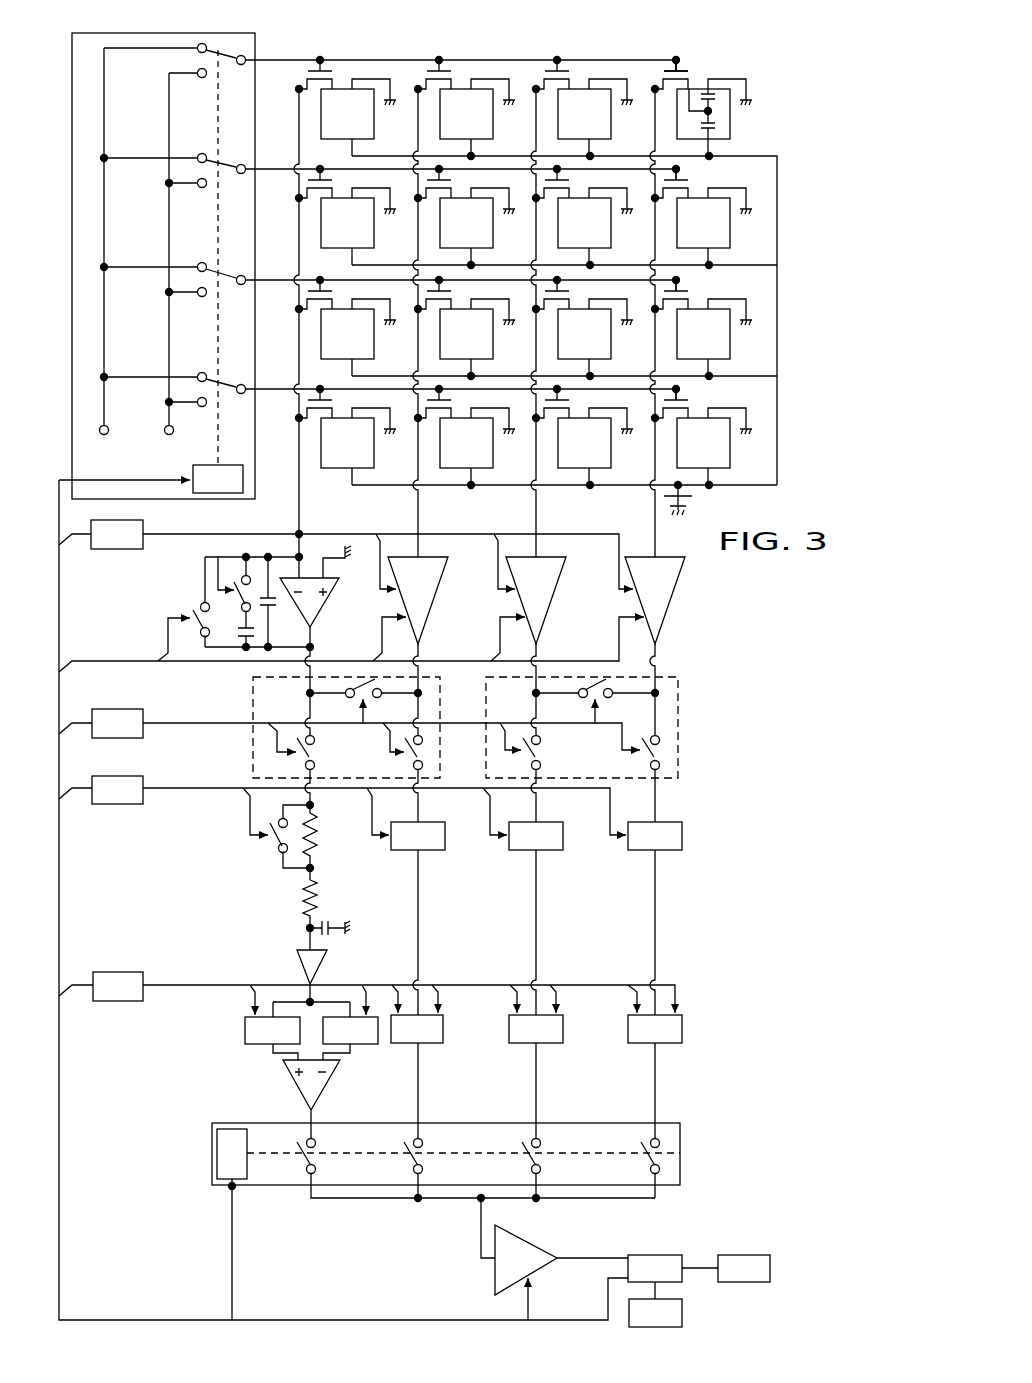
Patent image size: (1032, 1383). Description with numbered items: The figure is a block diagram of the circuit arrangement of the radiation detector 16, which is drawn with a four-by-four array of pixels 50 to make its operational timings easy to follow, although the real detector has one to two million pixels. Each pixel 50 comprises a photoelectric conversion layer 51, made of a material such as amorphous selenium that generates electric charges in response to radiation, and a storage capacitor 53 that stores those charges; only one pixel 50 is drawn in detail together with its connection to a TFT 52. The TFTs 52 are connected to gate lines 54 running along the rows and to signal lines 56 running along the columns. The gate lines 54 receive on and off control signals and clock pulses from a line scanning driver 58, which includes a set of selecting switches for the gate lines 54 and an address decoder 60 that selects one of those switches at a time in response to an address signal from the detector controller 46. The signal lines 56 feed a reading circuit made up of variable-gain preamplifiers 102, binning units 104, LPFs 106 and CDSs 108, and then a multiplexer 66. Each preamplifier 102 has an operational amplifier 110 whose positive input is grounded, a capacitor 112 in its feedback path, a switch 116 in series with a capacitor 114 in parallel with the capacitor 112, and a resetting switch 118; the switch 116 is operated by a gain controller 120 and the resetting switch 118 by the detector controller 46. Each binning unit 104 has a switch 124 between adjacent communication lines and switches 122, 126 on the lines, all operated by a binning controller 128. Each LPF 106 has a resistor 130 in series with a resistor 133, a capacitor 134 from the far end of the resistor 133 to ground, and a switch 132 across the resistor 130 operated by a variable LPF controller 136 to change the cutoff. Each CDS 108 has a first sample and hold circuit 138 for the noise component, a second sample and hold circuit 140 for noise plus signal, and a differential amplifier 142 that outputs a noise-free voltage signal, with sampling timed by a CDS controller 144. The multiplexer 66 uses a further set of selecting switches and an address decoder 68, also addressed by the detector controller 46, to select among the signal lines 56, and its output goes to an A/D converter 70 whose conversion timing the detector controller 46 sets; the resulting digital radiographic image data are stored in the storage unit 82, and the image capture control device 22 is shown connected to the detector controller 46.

The radiation detector 16 is at (523, 292).
The pixel 50 is at (580, 86).
The photoelectric conversion layer 51 is at (719, 126).
The thin-film transistor 52 is at (660, 73).
The storage capacitor 53 is at (718, 97).
The gate line 54 is at (600, 60).
The signal line 56 is at (298, 102).
The line scanning driver 58 is at (174, 264).
The address decoder 60 is at (235, 465).
The multiplexer 66 is at (457, 1220).
The address decoder 68 is at (217, 1145).
The A/D converter 70 is at (522, 1238).
The detector controller 46 is at (653, 1255).
The image capture control device 22 is at (745, 1255).
The storage unit 82 is at (683, 1310).
The variable-gain preamplifier 102 is at (329, 611).
The binning unit 104 is at (464, 755).
The LPF 106 is at (428, 902).
The CDS 108 is at (446, 1069).
The operational amplifier 110 is at (327, 598).
The capacitor 112 is at (264, 595).
The capacitor 114 is at (237, 634).
The switch 116 is at (237, 577).
The resetting switch 118 is at (198, 604).
The gain controller 120 is at (117, 550).
The switch 122 is at (428, 775).
The switch 124 is at (378, 712).
The switch 126 is at (315, 755).
The binning controller 128 is at (132, 738).
The resistor 130 is at (320, 840).
The switch 132 is at (270, 847).
The resistor 133 is at (300, 890).
The capacitor 134 is at (327, 923).
The variable LPF controller 136 is at (132, 804).
The first sample and hold circuit 138 is at (245, 1023).
The second sample and hold circuit 140 is at (365, 1045).
The differential amplifier 142 is at (302, 1100).
The CDS controller 144 is at (132, 1001).